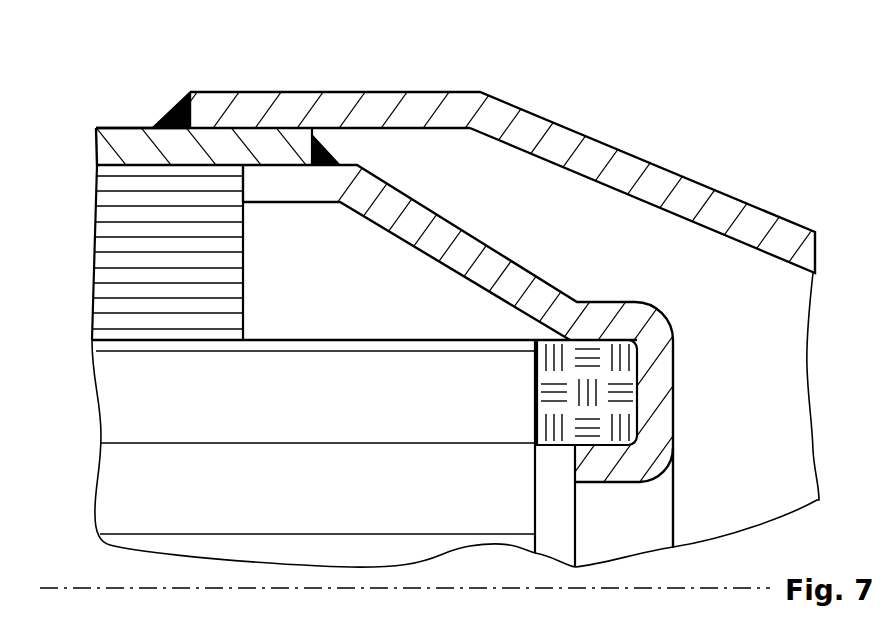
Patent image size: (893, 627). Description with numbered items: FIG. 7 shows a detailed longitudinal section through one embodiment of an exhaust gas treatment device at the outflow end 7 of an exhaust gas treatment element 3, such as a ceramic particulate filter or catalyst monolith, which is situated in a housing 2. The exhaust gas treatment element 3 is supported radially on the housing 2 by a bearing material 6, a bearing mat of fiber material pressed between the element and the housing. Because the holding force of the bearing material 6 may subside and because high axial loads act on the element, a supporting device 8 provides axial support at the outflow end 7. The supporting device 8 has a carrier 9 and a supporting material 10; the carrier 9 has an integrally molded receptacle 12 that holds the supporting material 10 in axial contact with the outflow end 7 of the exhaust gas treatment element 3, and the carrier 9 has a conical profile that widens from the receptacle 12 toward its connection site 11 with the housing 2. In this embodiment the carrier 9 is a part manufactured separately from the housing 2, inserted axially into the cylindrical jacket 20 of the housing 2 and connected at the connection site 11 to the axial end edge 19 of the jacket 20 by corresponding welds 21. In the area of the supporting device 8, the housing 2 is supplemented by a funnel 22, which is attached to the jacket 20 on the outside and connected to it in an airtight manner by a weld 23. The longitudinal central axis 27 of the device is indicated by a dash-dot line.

The housing 2 is at (102, 122).
The exhaust gas treatment element 3 is at (418, 498).
The bearing material 6 is at (118, 262).
The outflow end 7 is at (537, 513).
The supporting device 8 is at (698, 386).
The carrier 9 is at (417, 222).
The supporting material 10 is at (548, 365).
The connection site 11 is at (375, 99).
The receptacle 12 is at (503, 355).
The axial end edge 19 is at (312, 130).
The cylindrical jacket 20 is at (133, 142).
The welds 21 is at (342, 153).
The funnel 22 is at (675, 188).
The weld 23 is at (162, 108).
The longitudinal central axis 27 is at (83, 588).